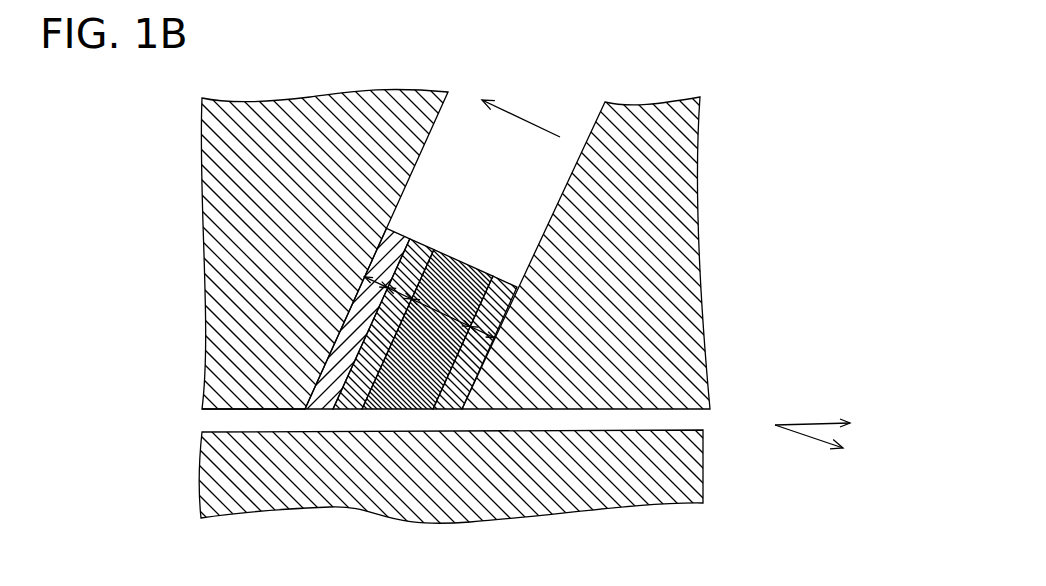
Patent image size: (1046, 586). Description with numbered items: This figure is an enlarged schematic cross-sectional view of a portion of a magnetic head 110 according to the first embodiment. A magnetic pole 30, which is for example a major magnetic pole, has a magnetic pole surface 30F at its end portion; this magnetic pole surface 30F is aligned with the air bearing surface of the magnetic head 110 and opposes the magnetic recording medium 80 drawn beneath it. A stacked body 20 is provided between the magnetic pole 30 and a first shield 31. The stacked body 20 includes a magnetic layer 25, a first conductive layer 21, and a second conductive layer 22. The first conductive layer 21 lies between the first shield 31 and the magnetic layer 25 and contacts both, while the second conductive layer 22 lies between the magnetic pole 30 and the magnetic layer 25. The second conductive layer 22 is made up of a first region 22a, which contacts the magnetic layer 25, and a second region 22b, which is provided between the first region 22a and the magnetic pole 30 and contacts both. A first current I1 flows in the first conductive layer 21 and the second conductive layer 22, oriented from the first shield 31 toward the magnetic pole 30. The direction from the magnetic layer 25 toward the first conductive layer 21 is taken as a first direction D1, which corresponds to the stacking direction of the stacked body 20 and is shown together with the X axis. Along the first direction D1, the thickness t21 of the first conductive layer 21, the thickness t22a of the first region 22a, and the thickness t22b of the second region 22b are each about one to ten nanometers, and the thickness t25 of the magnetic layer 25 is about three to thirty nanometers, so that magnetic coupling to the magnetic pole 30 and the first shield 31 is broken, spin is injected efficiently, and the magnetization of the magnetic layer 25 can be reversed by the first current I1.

The magnetic head 110 is at (730, 92).
The magnetic pole 30 is at (320, 135).
The magnetic pole surface 30F is at (252, 411).
The first shield 31 is at (643, 133).
The magnetic recording medium 80 is at (677, 470).
The stacked body 20 is at (398, 272).
The second conductive layer 22 is at (374, 285).
The first region 22a is at (418, 249).
The second region 22b is at (395, 252).
The magnetic layer 25 is at (457, 274).
The first conductive layer 21 is at (497, 302).
The thickness of the second region t22b is at (377, 283).
The thickness of the first region t22a is at (400, 296).
The thickness of the magnetic layer t25 is at (437, 320).
The thickness of the first conductive layer t21 is at (482, 333).
The first current I1 is at (515, 115).
The X direction X is at (821, 424).
The first direction D1 is at (826, 443).